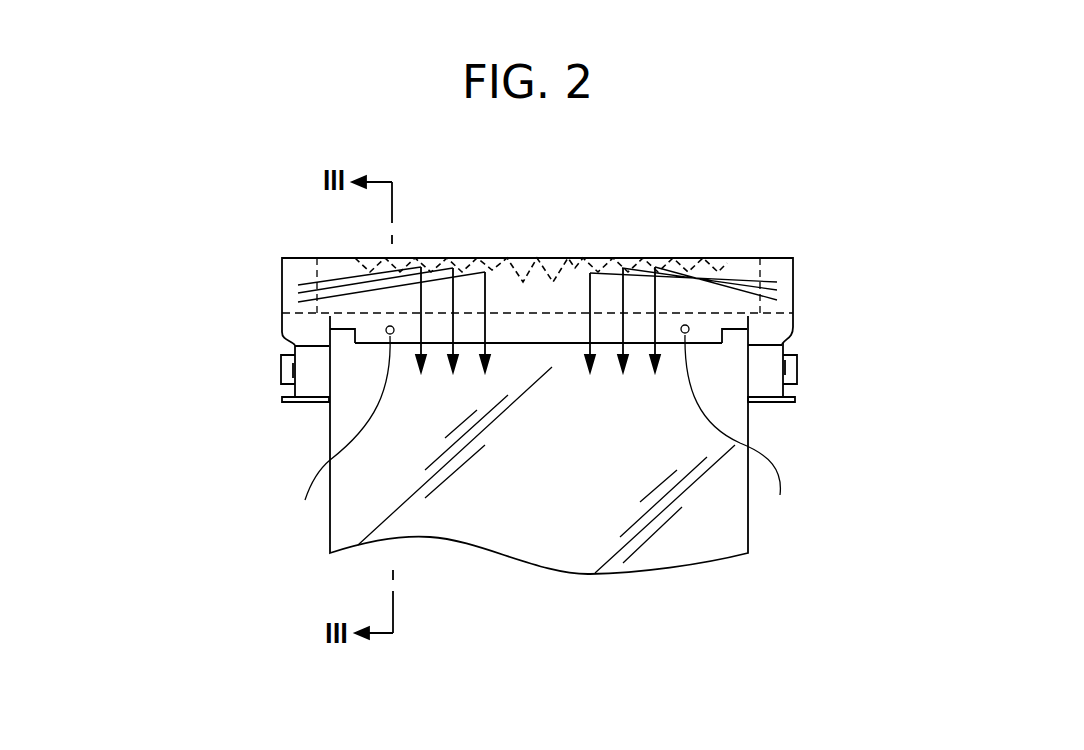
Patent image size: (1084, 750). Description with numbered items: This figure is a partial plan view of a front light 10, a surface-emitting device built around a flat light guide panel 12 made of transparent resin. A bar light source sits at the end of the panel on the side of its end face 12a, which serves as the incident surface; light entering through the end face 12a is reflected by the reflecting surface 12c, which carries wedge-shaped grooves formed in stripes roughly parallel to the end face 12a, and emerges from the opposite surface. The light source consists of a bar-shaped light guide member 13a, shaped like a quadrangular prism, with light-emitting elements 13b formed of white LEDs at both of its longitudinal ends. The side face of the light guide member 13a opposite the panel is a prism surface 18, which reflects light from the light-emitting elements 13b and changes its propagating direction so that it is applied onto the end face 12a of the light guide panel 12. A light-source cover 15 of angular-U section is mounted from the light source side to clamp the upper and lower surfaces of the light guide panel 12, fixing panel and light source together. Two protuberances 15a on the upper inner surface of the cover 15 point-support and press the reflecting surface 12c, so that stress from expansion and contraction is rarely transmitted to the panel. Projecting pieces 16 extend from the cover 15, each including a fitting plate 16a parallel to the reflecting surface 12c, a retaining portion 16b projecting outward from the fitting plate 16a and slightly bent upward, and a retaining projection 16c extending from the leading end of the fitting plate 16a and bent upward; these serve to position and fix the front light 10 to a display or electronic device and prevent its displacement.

The front light 10 is at (693, 240).
The light guide panel 12 is at (543, 566).
The end face 12a is at (514, 307).
The reflecting surface 12c is at (697, 537).
The light guide member 13a is at (747, 260).
The light-emitting elements 13b is at (298, 277).
The light-source cover 15 is at (326, 259).
The protuberances 15a is at (541, 432).
The projecting pieces 16 is at (303, 404).
The fitting plate 16a is at (294, 353).
The retaining portion 16b is at (280, 373).
The retaining projection 16c is at (282, 400).
The prism surface 18 is at (568, 257).